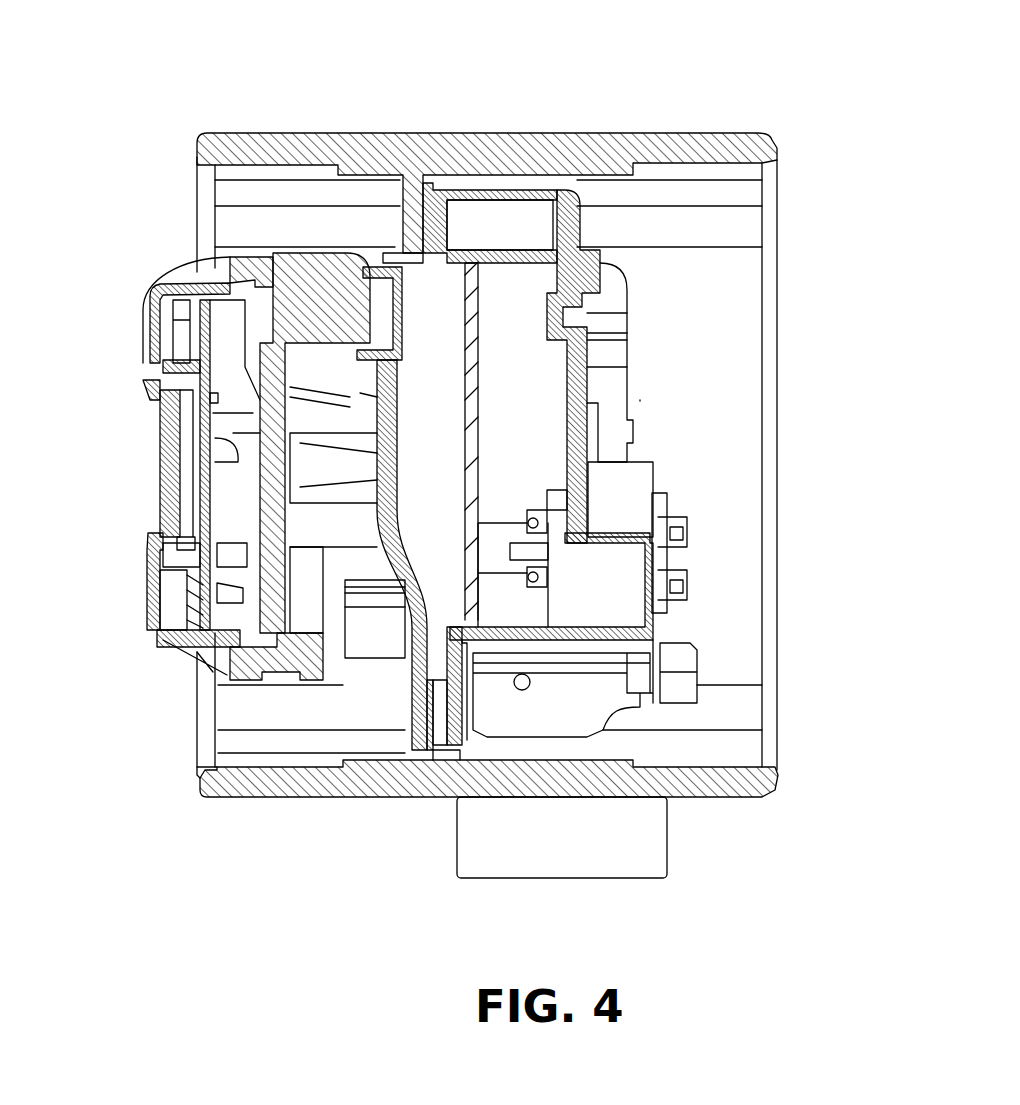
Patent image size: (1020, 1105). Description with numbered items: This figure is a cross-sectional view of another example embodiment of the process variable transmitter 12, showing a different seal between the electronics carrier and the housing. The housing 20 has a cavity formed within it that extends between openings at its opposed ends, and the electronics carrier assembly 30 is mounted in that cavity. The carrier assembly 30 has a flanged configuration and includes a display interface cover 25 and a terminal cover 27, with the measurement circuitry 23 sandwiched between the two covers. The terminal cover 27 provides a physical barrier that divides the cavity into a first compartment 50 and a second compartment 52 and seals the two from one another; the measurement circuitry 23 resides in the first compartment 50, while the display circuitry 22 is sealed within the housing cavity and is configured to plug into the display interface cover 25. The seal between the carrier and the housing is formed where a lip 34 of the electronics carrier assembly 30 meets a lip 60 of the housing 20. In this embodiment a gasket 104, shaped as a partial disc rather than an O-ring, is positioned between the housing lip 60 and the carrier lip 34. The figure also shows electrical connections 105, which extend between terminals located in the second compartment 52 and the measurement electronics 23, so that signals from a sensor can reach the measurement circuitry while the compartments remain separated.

The process variable transmitter 12 is at (152, 122).
The housing 20 is at (470, 133).
The display circuitry 22 is at (150, 642).
The measurement circuitry 23 is at (477, 310).
The display interface cover 25 is at (393, 253).
The terminal cover 27 is at (567, 200).
The electronics carrier assembly 30 is at (548, 180).
The lip 34 is at (443, 738).
The first compartment 50 is at (425, 550).
The second compartment 52 is at (720, 227).
The housing lip 60 is at (403, 717).
The gasket 104 is at (428, 745).
The electrical connections 105 is at (497, 567).